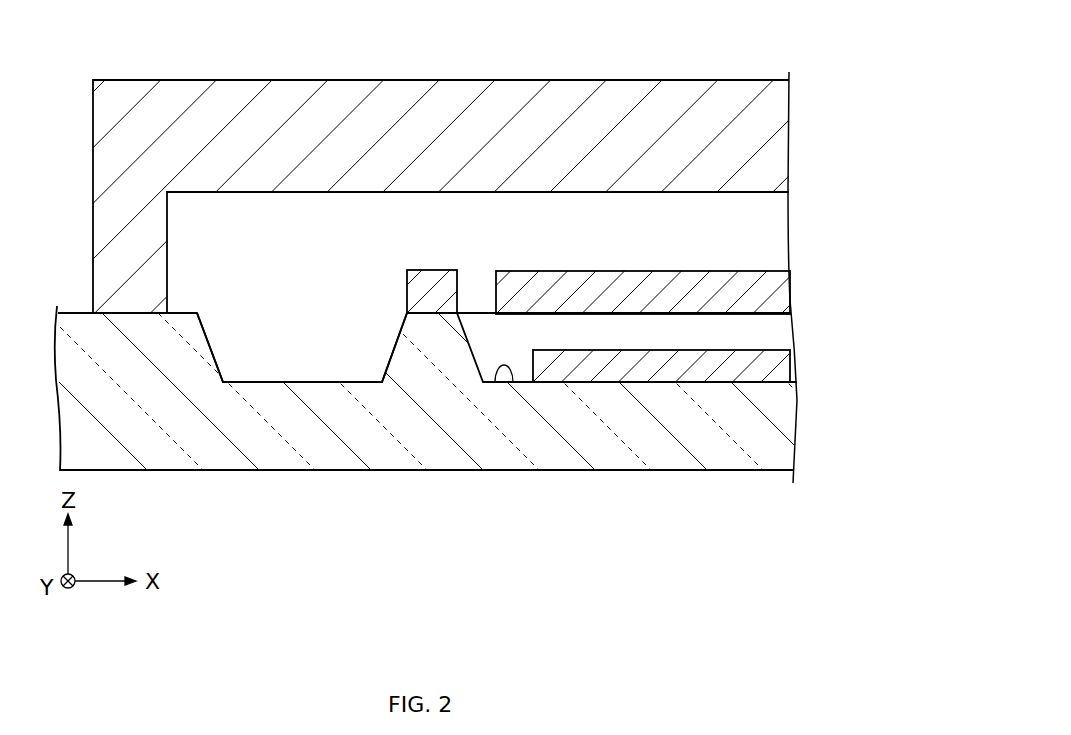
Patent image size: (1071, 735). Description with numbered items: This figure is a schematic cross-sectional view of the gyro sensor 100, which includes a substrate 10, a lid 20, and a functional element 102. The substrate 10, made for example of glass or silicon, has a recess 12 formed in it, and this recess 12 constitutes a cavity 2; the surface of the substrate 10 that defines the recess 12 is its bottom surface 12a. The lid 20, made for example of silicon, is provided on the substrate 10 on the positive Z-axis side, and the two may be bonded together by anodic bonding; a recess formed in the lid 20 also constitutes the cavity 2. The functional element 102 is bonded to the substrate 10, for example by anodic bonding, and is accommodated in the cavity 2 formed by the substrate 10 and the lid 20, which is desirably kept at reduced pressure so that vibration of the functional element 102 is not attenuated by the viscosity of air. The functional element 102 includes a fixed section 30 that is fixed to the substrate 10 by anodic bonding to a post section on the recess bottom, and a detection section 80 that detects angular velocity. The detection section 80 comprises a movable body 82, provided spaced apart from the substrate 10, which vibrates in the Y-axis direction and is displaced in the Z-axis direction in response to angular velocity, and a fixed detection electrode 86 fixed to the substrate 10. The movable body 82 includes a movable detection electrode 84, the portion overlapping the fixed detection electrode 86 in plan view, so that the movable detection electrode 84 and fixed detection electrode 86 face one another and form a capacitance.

The gyro sensor 100 is at (791, 40).
The lid 20 is at (750, 147).
The cavity 2 is at (558, 243).
The substrate 10 is at (465, 417).
The recess 12 is at (256, 298).
The bottom surface 12a is at (513, 382).
The fixed section 30 is at (423, 295).
The detection section 80 is at (649, 300).
The movable body 82 is at (665, 272).
The movable detection electrode 84 is at (676, 293).
The fixed detection electrode 86 is at (770, 372).
The functional element 102 is at (398, 254).